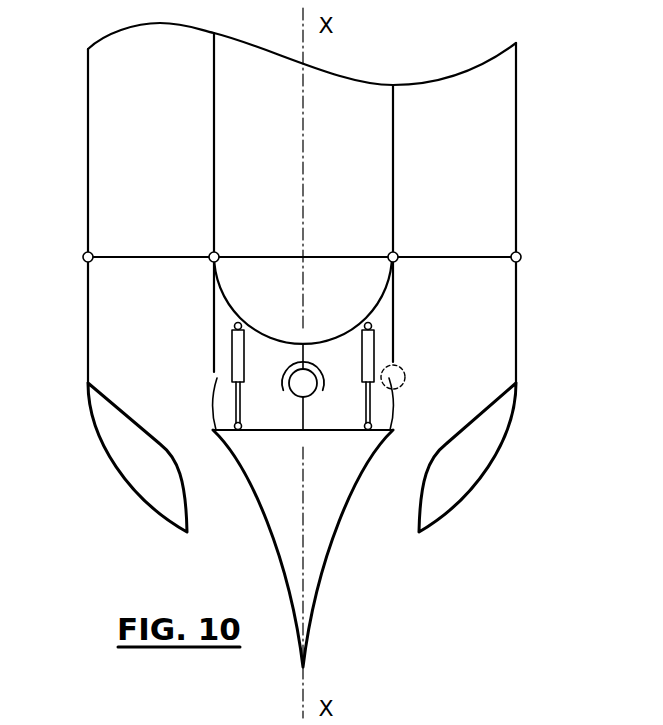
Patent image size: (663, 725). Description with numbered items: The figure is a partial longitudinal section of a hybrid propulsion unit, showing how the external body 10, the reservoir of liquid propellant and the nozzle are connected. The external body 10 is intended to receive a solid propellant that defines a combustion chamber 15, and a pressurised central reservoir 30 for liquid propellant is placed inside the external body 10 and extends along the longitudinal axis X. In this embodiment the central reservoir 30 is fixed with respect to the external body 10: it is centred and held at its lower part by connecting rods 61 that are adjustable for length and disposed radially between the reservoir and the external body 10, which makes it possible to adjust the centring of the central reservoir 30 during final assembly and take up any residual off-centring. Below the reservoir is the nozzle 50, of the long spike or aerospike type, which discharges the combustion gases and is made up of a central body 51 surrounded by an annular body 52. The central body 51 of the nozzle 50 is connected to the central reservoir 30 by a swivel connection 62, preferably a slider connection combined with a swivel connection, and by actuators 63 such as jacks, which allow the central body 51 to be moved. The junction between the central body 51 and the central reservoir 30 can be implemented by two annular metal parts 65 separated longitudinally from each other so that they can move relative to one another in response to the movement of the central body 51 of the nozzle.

The external body 10 is at (516, 165).
The combustion chamber 15 is at (140, 87).
The central reservoir 30 is at (393, 157).
The nozzle 50 is at (323, 525).
The central body 51 is at (330, 570).
The annular body 52 is at (112, 466).
The connecting rods 61 is at (145, 260).
The swivel connection 62 is at (300, 398).
The actuators 63 is at (232, 342).
The annular metal parts 65 is at (405, 383).